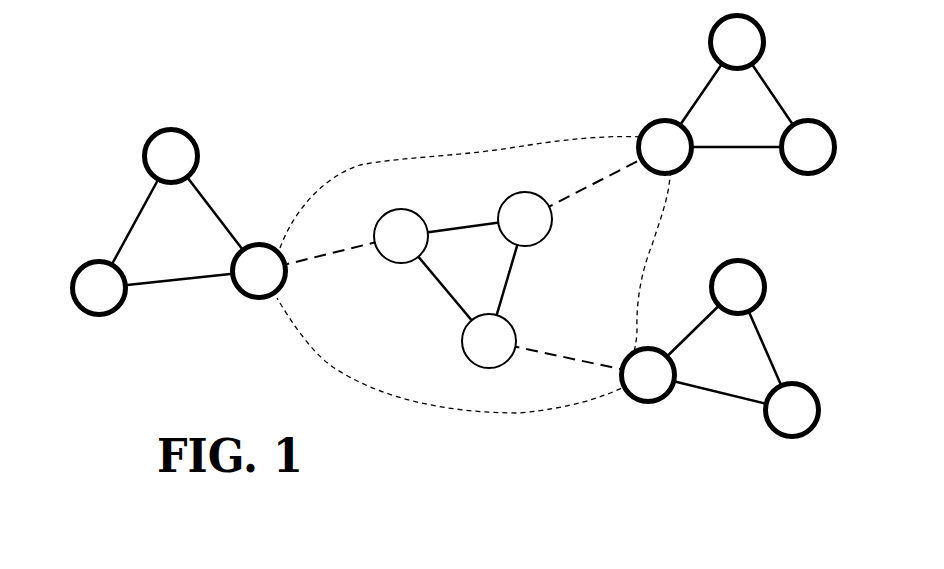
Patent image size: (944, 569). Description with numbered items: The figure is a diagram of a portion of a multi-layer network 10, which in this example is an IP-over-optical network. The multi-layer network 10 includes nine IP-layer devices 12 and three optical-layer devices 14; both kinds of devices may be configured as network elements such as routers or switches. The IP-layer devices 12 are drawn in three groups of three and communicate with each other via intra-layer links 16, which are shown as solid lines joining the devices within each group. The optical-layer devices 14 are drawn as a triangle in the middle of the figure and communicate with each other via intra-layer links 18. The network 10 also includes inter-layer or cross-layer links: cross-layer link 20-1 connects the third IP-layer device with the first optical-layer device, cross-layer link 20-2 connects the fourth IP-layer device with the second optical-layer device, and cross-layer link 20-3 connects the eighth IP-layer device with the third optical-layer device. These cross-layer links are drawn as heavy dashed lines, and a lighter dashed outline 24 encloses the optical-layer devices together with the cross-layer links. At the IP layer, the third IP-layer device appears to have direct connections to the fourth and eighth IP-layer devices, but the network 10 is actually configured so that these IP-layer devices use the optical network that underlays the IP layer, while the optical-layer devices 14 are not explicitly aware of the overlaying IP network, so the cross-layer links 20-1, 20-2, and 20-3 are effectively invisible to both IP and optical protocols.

The multi-layer network 10 is at (344, 96).
The IP-layer devices 12 is at (97, 262).
The optical-layer devices 14 is at (518, 331).
The intra-layer links 16 is at (215, 207).
The intra-layer links 18 is at (446, 228).
The cross-layer link 20-1 is at (317, 257).
The cross-layer link 20-2 is at (596, 186).
The cross-layer link 20-3 is at (567, 358).
The orchestration boundary 24 is at (497, 153).